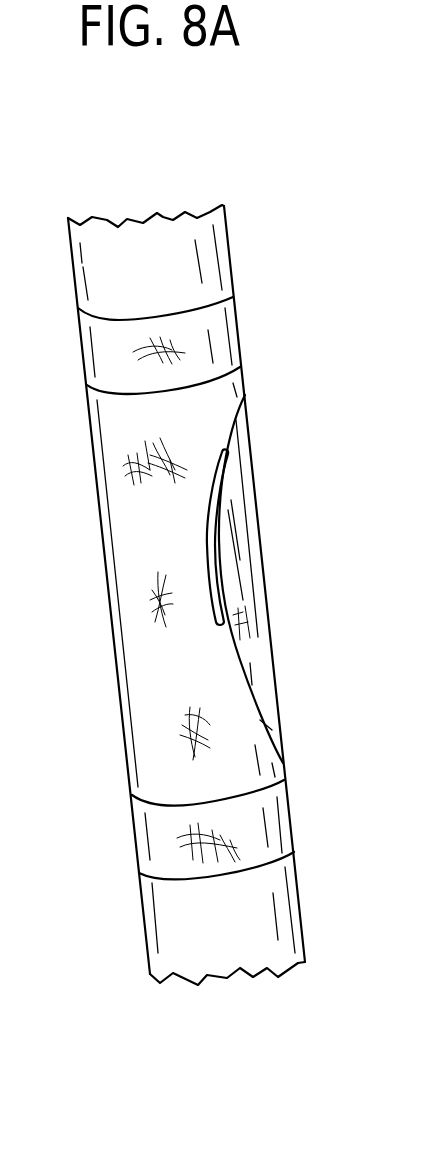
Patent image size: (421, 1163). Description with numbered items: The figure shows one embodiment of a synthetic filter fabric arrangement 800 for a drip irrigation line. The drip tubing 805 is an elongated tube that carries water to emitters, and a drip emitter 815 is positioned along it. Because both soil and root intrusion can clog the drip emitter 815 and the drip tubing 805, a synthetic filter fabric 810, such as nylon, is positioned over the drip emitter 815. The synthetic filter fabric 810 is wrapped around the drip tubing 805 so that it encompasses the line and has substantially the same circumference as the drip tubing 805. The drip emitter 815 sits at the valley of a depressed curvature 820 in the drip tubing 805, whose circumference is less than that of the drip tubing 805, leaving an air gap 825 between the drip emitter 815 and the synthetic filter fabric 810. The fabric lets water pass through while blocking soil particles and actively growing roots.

The surgical sheath assembly 800 is at (110, 193).
The drip tubing 805 is at (165, 240).
The synthetic filter fabric 810 is at (142, 762).
The drip emitter 815 is at (218, 472).
The depressed curvature 820 is at (225, 592).
The air gap 825 is at (220, 541).